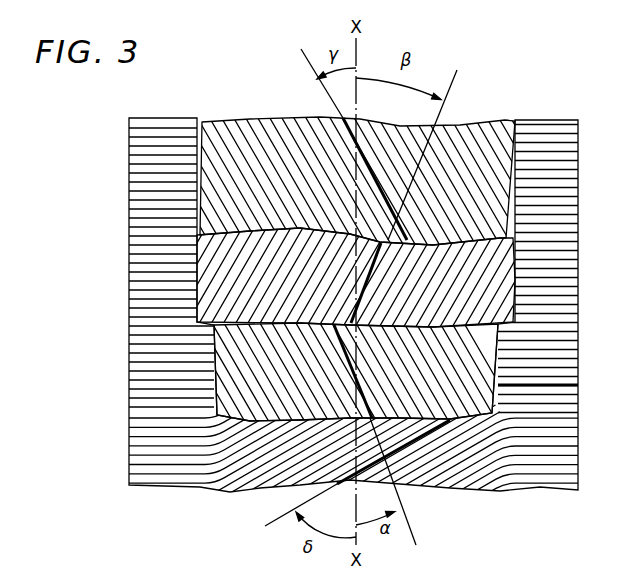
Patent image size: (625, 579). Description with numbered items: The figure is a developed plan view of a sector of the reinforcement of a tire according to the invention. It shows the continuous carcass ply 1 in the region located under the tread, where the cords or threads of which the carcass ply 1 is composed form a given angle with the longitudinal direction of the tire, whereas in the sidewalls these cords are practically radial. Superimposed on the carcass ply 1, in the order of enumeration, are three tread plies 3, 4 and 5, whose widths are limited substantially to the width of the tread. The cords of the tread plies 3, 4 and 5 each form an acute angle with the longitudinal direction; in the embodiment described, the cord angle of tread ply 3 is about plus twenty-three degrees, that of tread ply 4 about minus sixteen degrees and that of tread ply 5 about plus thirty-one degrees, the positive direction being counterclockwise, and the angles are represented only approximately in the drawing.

The carcass ply 1 is at (282, 467).
The tread ply 3 is at (287, 379).
The tread ply 4 is at (284, 293).
The tread ply 5 is at (279, 186).